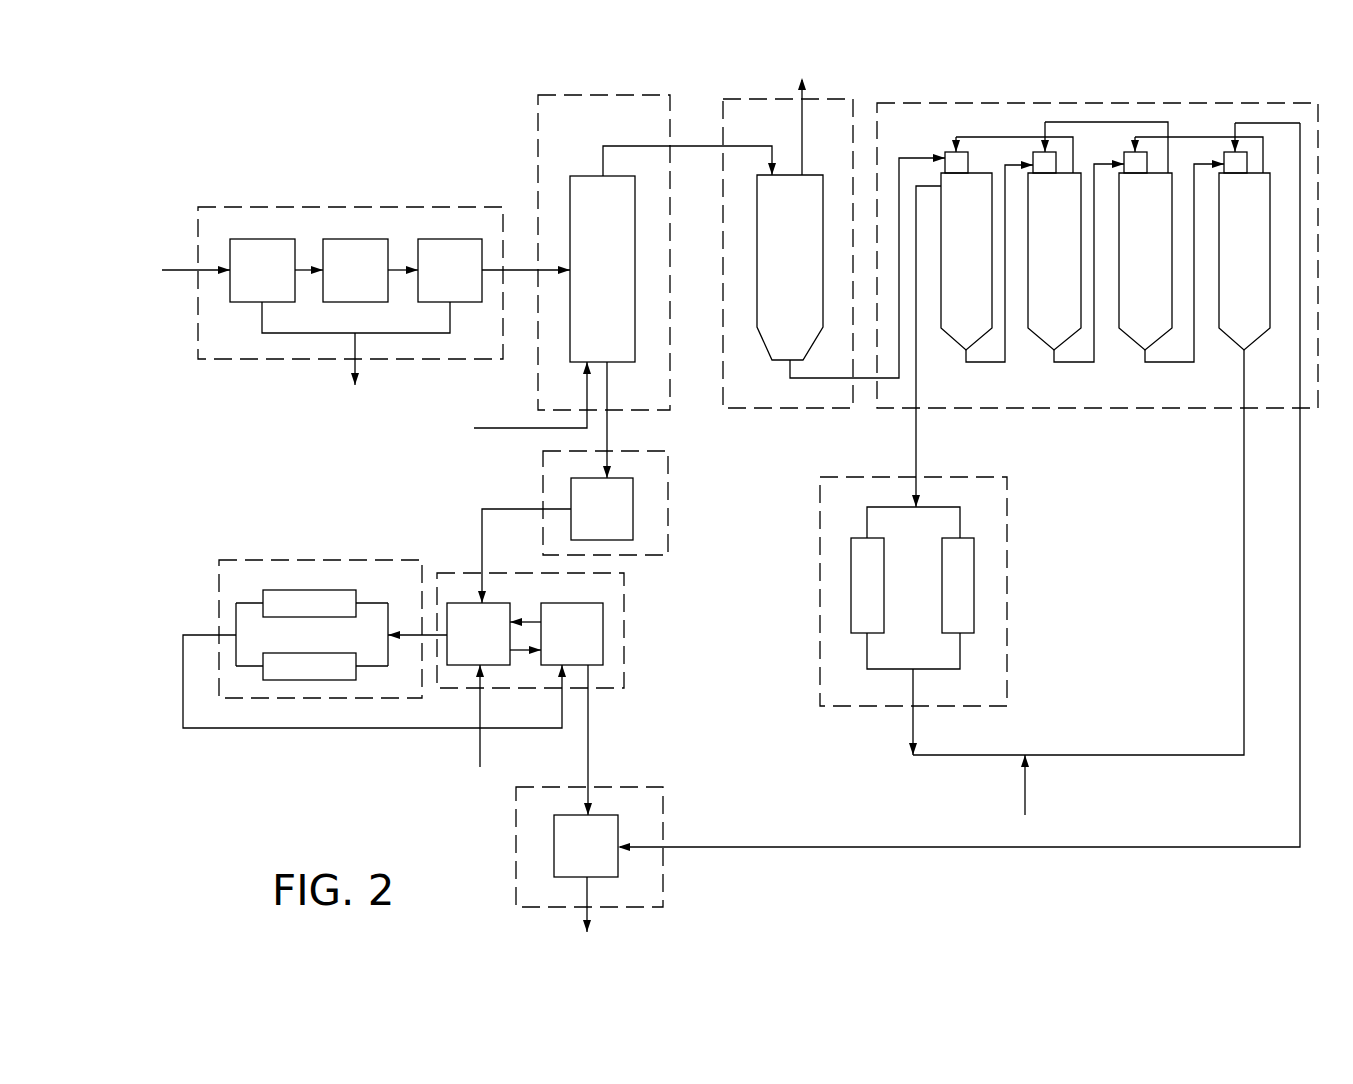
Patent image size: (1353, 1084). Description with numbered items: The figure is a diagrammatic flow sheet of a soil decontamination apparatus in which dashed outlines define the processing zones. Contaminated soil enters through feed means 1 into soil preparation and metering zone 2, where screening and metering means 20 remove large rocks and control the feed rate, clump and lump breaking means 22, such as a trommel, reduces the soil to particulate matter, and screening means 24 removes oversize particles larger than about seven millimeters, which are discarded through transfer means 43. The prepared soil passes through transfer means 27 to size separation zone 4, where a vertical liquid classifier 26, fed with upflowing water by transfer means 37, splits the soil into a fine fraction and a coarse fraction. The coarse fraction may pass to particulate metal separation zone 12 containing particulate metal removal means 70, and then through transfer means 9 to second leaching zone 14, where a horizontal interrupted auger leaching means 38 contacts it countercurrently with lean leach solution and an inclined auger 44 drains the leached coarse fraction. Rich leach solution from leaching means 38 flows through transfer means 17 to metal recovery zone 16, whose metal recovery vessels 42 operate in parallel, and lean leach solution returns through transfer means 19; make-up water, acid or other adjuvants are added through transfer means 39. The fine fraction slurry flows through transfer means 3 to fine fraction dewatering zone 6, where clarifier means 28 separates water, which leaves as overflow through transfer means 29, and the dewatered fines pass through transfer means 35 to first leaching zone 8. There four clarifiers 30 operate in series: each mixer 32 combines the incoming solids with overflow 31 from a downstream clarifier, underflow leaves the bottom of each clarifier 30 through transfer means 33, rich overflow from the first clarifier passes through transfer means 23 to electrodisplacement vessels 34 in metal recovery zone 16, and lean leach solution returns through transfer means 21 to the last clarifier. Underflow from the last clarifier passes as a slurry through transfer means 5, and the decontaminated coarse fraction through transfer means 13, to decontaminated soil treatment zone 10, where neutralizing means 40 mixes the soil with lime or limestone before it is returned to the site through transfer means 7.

The feed means 1 is at (185, 272).
The soil preparation and metering zone 2 is at (288, 360).
The transfer means 3 is at (683, 146).
The size separation zone 4 is at (672, 282).
The transfer means 5 is at (1195, 847).
The fine fraction dewatering zone 6 is at (770, 412).
The transfer means 7 is at (590, 897).
The first leaching zone 8 is at (1198, 412).
The transfer means 9 is at (608, 425).
The decontaminated soil treatment zone 10 is at (678, 824).
The particulate metal separation zone 12 is at (679, 522).
The transfer means 13 is at (590, 738).
The second leaching zone 14 is at (630, 580).
The metal recovery zone 16 is at (1010, 588).
The transfer means 17 is at (410, 650).
The transfer means 19 is at (327, 728).
The screening and metering means 20 is at (256, 239).
The transfer means 21 is at (1090, 755).
The clump and lump breaking means 22 is at (351, 239).
The transfer means 23 is at (914, 440).
The screening means 24 is at (451, 239).
The classifier 26 is at (576, 176).
The transfer means 27 is at (518, 268).
The clarifier means 28 is at (770, 350).
The transfer means 29 is at (803, 118).
The clarifier 30 is at (950, 336).
The overflow 31 is at (1000, 137).
The mixer 32 is at (946, 152).
The transfer means 33 is at (980, 363).
The electrodisplacement vessels 34 is at (852, 540).
The transfer means 35 is at (836, 378).
The transfer means 37 is at (482, 428).
The leaching means 38 is at (462, 603).
The transfer means 39 is at (1028, 788).
The neutralizing means 40 is at (602, 815).
The metal recovery vessels 42 is at (322, 590).
The transfer means 43 is at (360, 368).
The inclined auger 44 is at (605, 630).
The particulate metal removal means 70 is at (635, 492).